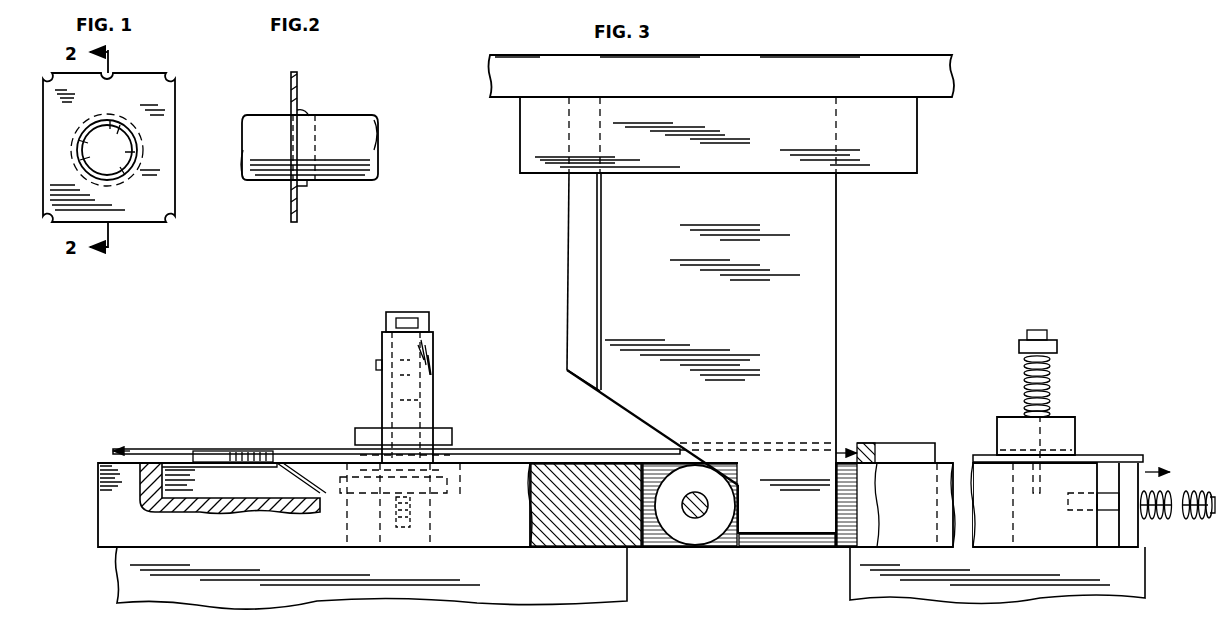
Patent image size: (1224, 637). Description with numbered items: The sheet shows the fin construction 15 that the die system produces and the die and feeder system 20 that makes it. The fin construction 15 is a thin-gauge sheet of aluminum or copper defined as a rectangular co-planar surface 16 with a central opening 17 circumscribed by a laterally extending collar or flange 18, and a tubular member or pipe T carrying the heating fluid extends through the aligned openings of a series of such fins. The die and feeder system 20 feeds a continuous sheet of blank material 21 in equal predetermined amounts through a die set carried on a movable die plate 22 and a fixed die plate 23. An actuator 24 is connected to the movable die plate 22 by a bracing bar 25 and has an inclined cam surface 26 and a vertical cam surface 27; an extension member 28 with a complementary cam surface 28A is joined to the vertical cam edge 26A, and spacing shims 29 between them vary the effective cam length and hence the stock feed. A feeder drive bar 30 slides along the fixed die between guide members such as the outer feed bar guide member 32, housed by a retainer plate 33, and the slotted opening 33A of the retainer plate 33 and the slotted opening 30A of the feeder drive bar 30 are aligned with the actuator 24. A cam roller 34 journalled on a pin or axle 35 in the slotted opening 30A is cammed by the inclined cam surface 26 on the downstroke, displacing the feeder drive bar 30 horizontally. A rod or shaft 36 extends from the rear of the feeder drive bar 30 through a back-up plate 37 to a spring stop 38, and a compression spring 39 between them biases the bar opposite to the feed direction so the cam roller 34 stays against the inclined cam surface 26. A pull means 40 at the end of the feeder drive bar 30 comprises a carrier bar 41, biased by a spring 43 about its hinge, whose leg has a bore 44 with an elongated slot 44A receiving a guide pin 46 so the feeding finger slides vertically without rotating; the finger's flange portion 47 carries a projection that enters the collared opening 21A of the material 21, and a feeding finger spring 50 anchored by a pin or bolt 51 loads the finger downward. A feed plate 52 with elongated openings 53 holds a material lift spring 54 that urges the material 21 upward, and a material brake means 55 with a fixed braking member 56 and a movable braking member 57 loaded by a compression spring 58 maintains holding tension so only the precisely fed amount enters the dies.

In FIG. 1, the fin construction 15 is at (178, 95).
In FIG. 1, the co-planar surface 16 is at (157, 157).
In FIG. 2, the co-planar surface 16 is at (298, 93).
In FIG. 1, the central opening 17 is at (85, 140).
In FIG. 2, the central opening 17 is at (292, 125).
In FIG. 1, the collar or flange 18 is at (125, 180).
In FIG. 2, the collar or flange 18 is at (308, 186).
In FIG. 2, the tubular member or pipe T is at (362, 122).
In FIG. 3, the die and feeder system 20 is at (850, 328).
In FIG. 3, the sheet of blank material 21 is at (135, 448).
In FIG. 3, the collared opening 21A is at (255, 452).
In FIG. 3, the movable die plate 22 is at (940, 84).
In FIG. 3, the fixed die plate 23 is at (545, 590).
In FIG. 3, the actuator 24 is at (815, 222).
In FIG. 3, the bracing bar 25 is at (902, 158).
In FIG. 3, the inclined cam surface 26 is at (596, 393).
In FIG. 3, the vertical cam edge 26A is at (598, 265).
In FIG. 3, the vertical cam surface 27 is at (567, 297).
In FIG. 3, the extension member 28 is at (577, 247).
In FIG. 3, the complementary cam surface 28A is at (573, 376).
In FIG. 3, the spacing shims 29 is at (601, 208).
In FIG. 3, the feeder drive bar 30 is at (604, 519).
In FIG. 3, the slotted opening 30A is at (793, 538).
In FIG. 3, the outer feed bar guide member 32 is at (489, 520).
In FIG. 3, the retainer plate 33 is at (896, 443).
In FIG. 3, the slotted opening 33A is at (855, 443).
In FIG. 3, the cam roller 34 is at (706, 536).
In FIG. 3, the pin or axle 35 is at (688, 515).
In FIG. 3, the rod or shaft 36 is at (1108, 505).
In FIG. 3, the back-up plate 37 is at (1138, 525).
In FIG. 3, the spring stop 38 is at (1200, 520).
In FIG. 3, the compression spring 39 is at (1172, 495).
In FIG. 3, the pull means 40 is at (445, 368).
In FIG. 3, the carrier bar 41 is at (435, 335).
In FIG. 3, the spring 43 is at (405, 527).
In FIG. 3, the bore 44 is at (420, 400).
In FIG. 3, the elongated slot 44A is at (385, 380).
In FIG. 3, the guide pin 46 is at (376, 365).
In FIG. 3, the flange portion 47 is at (440, 432).
In FIG. 3, the feeding finger spring 50 is at (398, 312).
In FIG. 3, the pin or bolt 51 is at (390, 322).
In FIG. 3, the feed plate 52 is at (105, 498).
In FIG. 3, the elongated openings 53 is at (250, 488).
In FIG. 3, the material lift spring 54 is at (213, 462).
In FIG. 3, the material brake means 55 is at (1062, 402).
In FIG. 3, the fixed braking member 56 is at (1043, 532).
In FIG. 3, the movable braking member 57 is at (1068, 432).
In FIG. 3, the compression spring 58 is at (1050, 365).